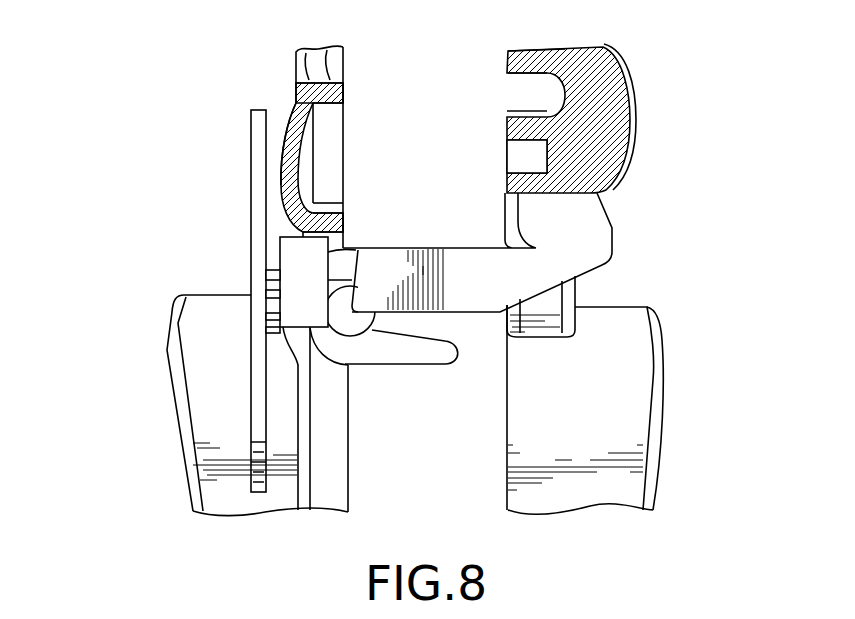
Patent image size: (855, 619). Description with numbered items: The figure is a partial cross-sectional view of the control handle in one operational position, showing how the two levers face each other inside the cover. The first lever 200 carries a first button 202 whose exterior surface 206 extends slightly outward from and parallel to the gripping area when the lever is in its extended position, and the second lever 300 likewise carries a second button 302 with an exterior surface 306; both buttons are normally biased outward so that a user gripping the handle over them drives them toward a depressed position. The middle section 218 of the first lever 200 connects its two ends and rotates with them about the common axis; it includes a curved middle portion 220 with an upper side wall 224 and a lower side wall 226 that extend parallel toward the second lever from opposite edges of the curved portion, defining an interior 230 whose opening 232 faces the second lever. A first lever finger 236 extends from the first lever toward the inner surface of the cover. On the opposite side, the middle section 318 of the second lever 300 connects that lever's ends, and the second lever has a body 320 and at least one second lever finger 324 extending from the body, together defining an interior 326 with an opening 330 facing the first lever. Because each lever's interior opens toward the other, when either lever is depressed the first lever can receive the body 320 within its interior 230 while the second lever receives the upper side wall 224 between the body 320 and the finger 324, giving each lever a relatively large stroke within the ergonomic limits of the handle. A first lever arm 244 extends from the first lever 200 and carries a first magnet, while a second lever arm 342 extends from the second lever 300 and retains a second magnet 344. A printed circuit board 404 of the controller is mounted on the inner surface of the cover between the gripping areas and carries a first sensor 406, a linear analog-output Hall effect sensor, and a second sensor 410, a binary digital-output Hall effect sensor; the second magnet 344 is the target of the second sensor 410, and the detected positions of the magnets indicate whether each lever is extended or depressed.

The first lever 200 is at (293, 243).
The first button 202 is at (200, 387).
The exterior surface of the first button 206 is at (177, 423).
The middle section of the first lever 218 is at (283, 127).
The curved middle portion 220 is at (283, 150).
The upper side wall 224 is at (297, 83).
The lower side wall 226 is at (328, 212).
The interior of the first lever 230 is at (323, 123).
The opening 232 is at (345, 100).
The first lever finger 236 is at (333, 62).
The first lever arm 244 is at (290, 306).
The second lever 300 is at (552, 298).
The second button 302 is at (603, 383).
The exterior surface of the second button 306 is at (660, 432).
The middle section of the second lever 318 is at (630, 90).
The body 320 is at (520, 155).
The second lever finger 324 is at (583, 67).
The interior of the second lever 326 is at (527, 95).
The opening 330 is at (507, 57).
The second lever arm 342 is at (442, 287).
The second magnet 344 is at (352, 325).
The printed circuit board 404 is at (252, 233).
The first sensor 406 is at (265, 280).
The second sensor 410 is at (268, 323).